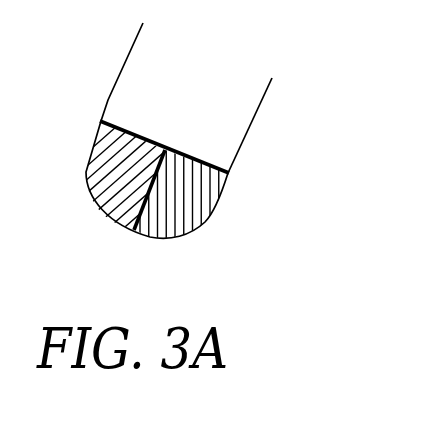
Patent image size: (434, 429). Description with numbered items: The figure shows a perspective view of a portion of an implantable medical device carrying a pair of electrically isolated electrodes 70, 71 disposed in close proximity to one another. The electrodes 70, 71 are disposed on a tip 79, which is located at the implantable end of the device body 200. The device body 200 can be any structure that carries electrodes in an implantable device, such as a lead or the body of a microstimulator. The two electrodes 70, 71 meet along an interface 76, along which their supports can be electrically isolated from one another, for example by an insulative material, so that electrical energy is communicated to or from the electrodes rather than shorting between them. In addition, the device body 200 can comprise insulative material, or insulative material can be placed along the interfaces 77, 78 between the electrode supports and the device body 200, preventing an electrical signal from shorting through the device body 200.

The device body 200 is at (193, 66).
The electrode 70 is at (99, 192).
The electrode 71 is at (197, 208).
The interface 76 is at (134, 246).
The interface 77 is at (125, 125).
The interface 78 is at (213, 162).
The tip 79 is at (203, 244).